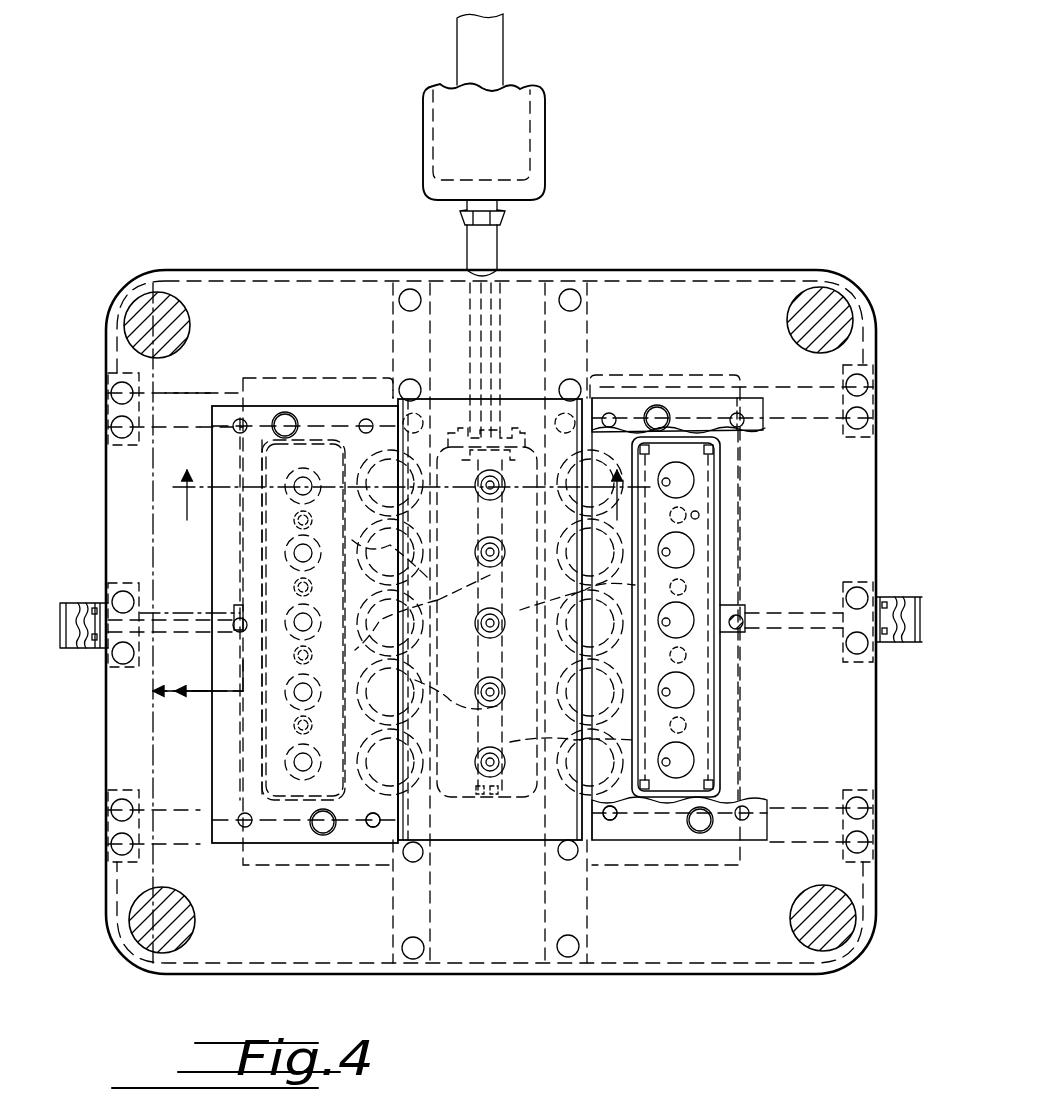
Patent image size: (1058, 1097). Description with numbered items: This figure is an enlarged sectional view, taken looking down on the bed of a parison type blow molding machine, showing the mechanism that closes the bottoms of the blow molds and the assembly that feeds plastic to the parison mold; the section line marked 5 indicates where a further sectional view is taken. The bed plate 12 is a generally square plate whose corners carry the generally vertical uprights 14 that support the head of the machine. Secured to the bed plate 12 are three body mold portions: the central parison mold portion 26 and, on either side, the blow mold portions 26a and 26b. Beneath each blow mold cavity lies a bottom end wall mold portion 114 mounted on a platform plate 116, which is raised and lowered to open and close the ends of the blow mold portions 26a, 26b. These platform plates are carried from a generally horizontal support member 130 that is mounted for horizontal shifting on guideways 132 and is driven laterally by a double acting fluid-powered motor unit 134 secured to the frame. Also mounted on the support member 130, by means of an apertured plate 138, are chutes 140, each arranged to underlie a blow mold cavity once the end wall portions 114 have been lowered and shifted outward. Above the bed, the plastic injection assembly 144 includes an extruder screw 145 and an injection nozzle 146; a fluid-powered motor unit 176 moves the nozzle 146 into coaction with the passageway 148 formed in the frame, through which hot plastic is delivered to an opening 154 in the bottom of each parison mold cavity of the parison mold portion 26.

The bed plate 12 is at (742, 268).
The uprights 14 is at (162, 312).
The parison mold portion 26 is at (525, 395).
The blow mold portion 26a is at (738, 396).
The blow mold portion 26b is at (268, 398).
The bottom end wall mold portion 114 is at (694, 488).
The platform plate 116 is at (714, 665).
The support member 130 is at (345, 378).
The guideways 132 is at (205, 390).
The motor unit 134 is at (84, 648).
The apertured plate 138 is at (384, 800).
The chutes 140 is at (493, 623).
The plastic injection assembly 144 is at (549, 131).
The extruder screw 145 is at (492, 135).
The injection nozzle 146 is at (487, 246).
The passageway 148 is at (490, 372).
The opening 154 is at (492, 492).
The motor unit 176 is at (470, 40).
The section line 5- 5 is at (411, 471).